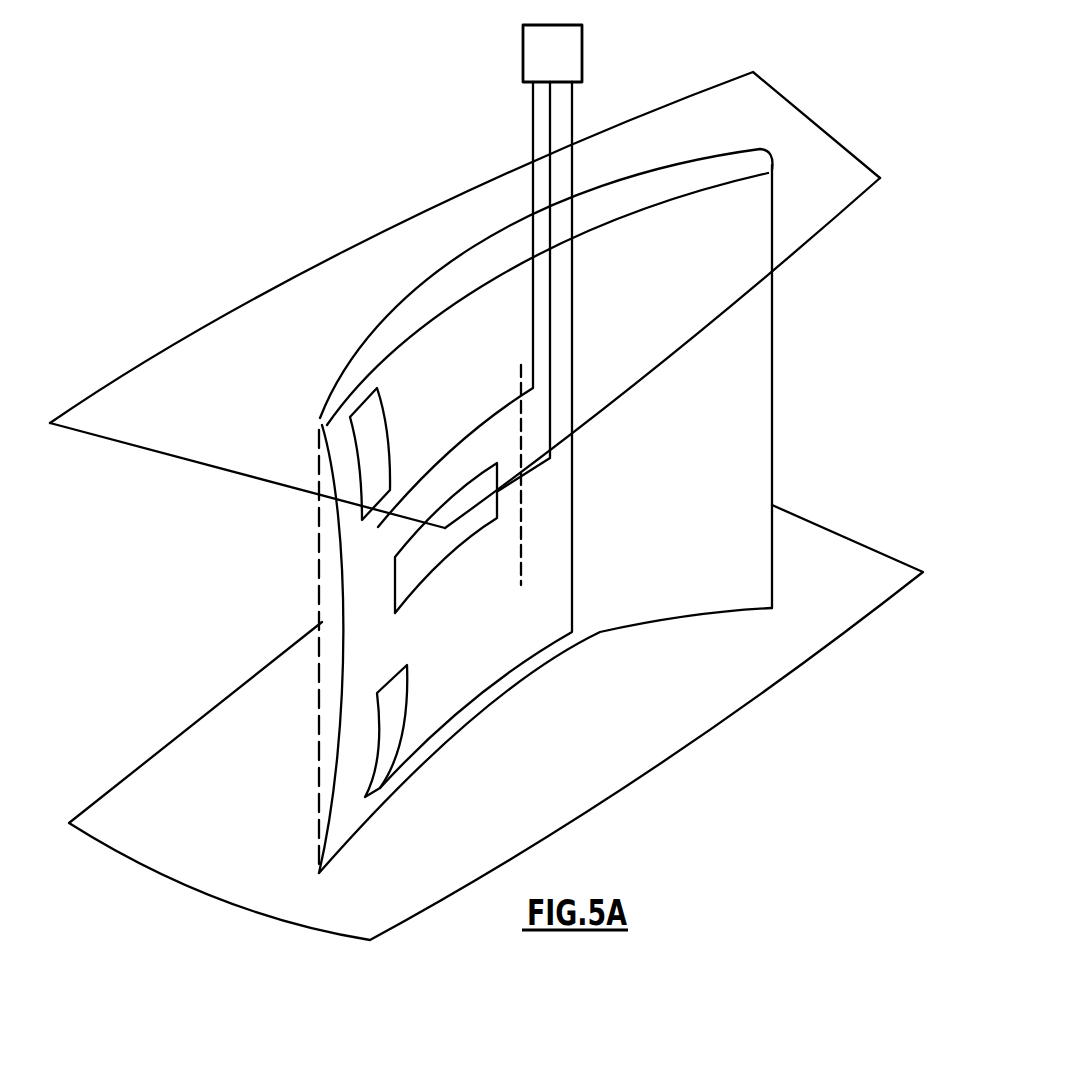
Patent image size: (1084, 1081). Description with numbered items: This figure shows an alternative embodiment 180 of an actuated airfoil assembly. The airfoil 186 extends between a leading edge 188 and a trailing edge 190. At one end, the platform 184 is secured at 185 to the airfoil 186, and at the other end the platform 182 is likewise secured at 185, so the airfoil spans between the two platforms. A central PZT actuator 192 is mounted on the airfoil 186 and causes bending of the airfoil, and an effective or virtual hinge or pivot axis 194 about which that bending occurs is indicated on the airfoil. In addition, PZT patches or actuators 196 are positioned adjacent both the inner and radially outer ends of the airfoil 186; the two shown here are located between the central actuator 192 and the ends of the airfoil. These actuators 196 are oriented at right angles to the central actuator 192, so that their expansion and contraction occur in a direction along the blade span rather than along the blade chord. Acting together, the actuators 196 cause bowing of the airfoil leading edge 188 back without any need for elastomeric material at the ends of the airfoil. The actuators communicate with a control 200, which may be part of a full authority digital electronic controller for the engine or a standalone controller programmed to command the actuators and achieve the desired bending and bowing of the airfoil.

The alternative embodiment 180 is at (861, 88).
The platform 182 is at (219, 331).
The platform 184 is at (833, 560).
The securement location 185 is at (322, 405).
The airfoil 186 is at (750, 383).
The leading edge 188 is at (318, 598).
The trailing edge 190 is at (772, 443).
The central PZT actuator 192 is at (437, 543).
The virtual hinge or pivot axis 194 is at (520, 550).
The PZT patches or actuators 196 is at (373, 423).
The control 200 is at (480, 406).